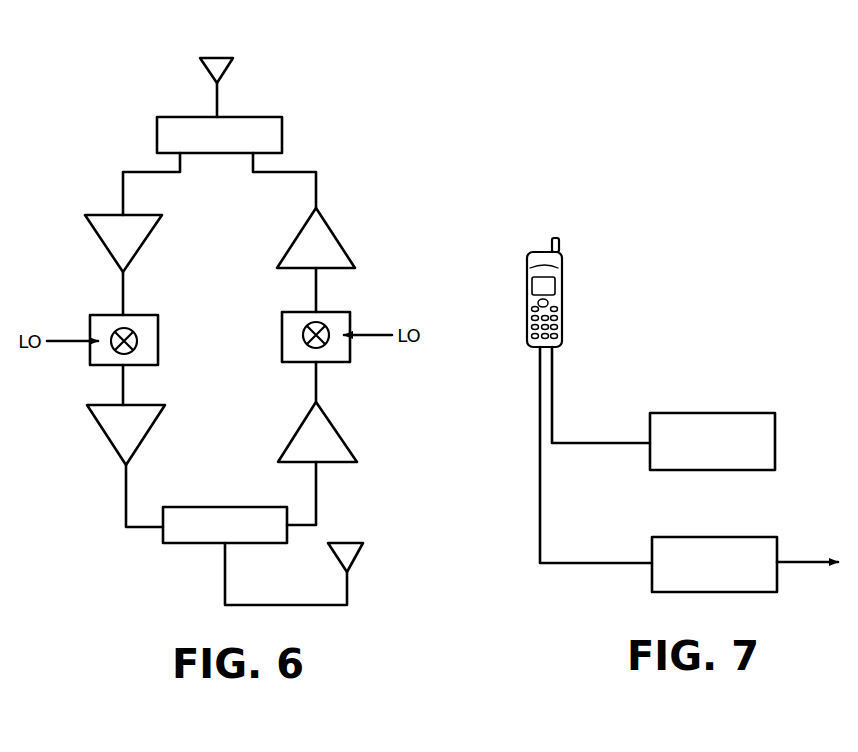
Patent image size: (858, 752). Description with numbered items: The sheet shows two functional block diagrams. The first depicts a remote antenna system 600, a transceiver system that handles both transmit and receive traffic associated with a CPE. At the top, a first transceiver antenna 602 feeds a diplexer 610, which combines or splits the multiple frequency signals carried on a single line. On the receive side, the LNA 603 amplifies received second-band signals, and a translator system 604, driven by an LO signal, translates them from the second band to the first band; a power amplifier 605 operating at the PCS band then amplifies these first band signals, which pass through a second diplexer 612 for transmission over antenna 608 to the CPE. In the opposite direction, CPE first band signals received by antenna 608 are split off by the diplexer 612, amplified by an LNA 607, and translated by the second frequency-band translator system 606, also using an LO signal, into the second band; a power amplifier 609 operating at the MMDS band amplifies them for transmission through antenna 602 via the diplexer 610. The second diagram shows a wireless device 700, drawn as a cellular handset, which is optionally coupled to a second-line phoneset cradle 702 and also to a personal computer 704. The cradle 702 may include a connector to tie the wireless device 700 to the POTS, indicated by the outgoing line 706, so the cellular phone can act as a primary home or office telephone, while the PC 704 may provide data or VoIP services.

In FIG. 6, the remote antenna system 600 is at (344, 100).
In FIG. 6, the first transceiver antenna 602 is at (207, 58).
In FIG. 6, the LNA 603 is at (87, 220).
In FIG. 6, the translator system 604 is at (95, 315).
In FIG. 6, the power amplifier 605 is at (98, 422).
In FIG. 6, the second frequency-band translator system 606 is at (350, 312).
In FIG. 6, the LNA 607 is at (338, 430).
In FIG. 6, the antenna 608 is at (358, 547).
In FIG. 6, the power amplifier 609 is at (332, 234).
In FIG. 6, the diplexer 610 is at (243, 116).
In FIG. 6, the diplexer 612 is at (205, 507).
In FIG. 7, the wireless device 700 is at (563, 291).
In FIG. 7, the second-line phoneset cradle 702 is at (710, 537).
In FIG. 7, the personal computer 704 is at (710, 413).
In FIG. 7, the output connection 706 is at (800, 558).